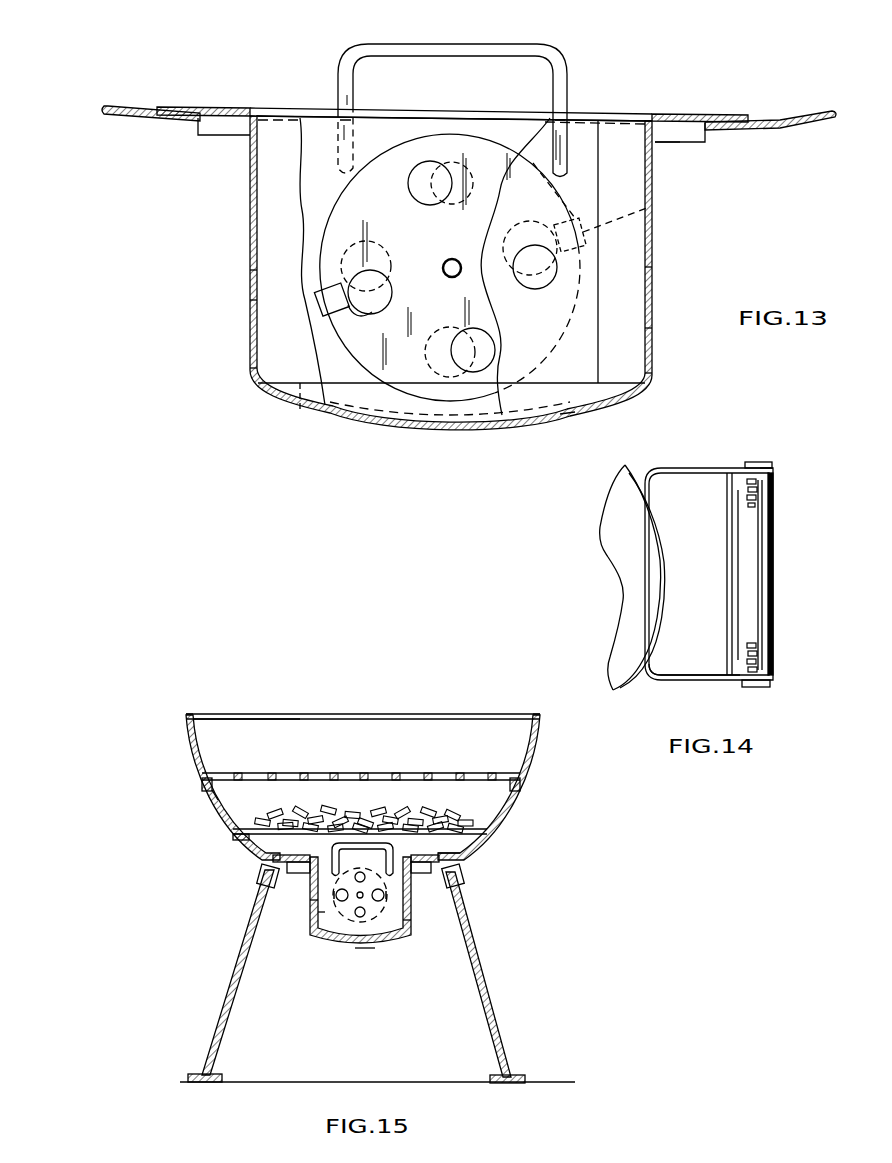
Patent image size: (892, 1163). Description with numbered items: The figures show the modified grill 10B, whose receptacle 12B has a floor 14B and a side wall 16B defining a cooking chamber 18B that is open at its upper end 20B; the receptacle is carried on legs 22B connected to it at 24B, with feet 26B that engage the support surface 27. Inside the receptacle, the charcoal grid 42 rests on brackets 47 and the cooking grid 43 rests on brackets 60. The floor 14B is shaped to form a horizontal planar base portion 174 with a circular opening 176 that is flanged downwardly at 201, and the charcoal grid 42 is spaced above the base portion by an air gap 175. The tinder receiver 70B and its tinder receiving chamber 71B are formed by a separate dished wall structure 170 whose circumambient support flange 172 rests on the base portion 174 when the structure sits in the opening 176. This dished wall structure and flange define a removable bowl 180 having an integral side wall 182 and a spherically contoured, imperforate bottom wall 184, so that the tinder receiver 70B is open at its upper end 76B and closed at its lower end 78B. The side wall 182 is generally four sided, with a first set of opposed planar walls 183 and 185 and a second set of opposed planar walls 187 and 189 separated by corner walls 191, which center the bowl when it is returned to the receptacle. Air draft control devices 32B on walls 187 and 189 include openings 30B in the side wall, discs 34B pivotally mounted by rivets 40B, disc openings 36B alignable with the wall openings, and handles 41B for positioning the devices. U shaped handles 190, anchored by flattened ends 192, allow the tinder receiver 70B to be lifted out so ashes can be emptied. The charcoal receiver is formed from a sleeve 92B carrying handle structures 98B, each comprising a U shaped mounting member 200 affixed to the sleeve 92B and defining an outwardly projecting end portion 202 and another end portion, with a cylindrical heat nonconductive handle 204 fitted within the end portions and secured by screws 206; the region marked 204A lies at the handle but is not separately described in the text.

In FIG. 15, the modified grill 10B is at (224, 702).
In FIG. 15, the receptacle 12B is at (182, 746).
In FIG. 13, the floor 14B is at (124, 126).
In FIG. 15, the floor 14B is at (263, 868).
In FIG. 15, the side wall 16B is at (212, 808).
In FIG. 15, the cooking chamber 18B is at (285, 742).
In FIG. 15, the upper end 20B is at (541, 714).
In FIG. 15, the legs 22B is at (488, 959).
In FIG. 15, the leg connection 24B is at (470, 878).
In FIG. 15, the feet 26B is at (524, 1073).
In FIG. 15, the support surface 27 is at (432, 1081).
In FIG. 13, the openings 30B is at (380, 277).
In FIG. 13, the air draft control devices 32B is at (358, 380).
In FIG. 15, the air draft control devices 32B is at (346, 923).
In FIG. 13, the discs 34B is at (420, 392).
In FIG. 13, the disc openings 36B is at (372, 312).
In FIG. 13, the rivets 40B is at (443, 267).
In FIG. 13, the handles 41B is at (648, 208).
In FIG. 15, the charcoal grid 42 is at (270, 843).
In FIG. 15, the cooking grid 43 is at (404, 766).
In FIG. 15, the brackets 47 is at (235, 838).
In FIG. 15, the brackets 60 is at (207, 786).
In FIG. 13, the tinder receiver 70B is at (248, 402).
In FIG. 13, the tinder receiving chamber 71B is at (636, 249).
In FIG. 13, the upper end 76B is at (645, 114).
In FIG. 13, the lower end 78B is at (650, 385).
In FIG. 14, the sleeve 92B is at (632, 468).
In FIG. 14, the handle structures 98B is at (770, 444).
In FIG. 13, the dished wall structure 170 is at (250, 243).
In FIG. 15, the dished wall structure 170 is at (325, 917).
In FIG. 13, the support flange 172 is at (208, 108).
In FIG. 15, the support flange 172 is at (433, 870).
In FIG. 13, the planar base portion 174 is at (778, 128).
In FIG. 15, the air gap 175 is at (448, 850).
In FIG. 13, the circular opening 176 is at (684, 130).
In FIG. 13, the bowl 180 is at (244, 302).
In FIG. 15, the bowl 180 is at (365, 952).
In FIG. 13, the side wall 182 is at (653, 267).
In FIG. 13, the planar wall 183 is at (250, 267).
In FIG. 15, the planar wall 183 is at (298, 900).
In FIG. 13, the bottom wall 184 is at (583, 410).
In FIG. 13, the planar wall 185 is at (652, 327).
In FIG. 15, the planar wall 185 is at (413, 921).
In FIG. 13, the planar wall 187 is at (373, 397).
In FIG. 13, the planar wall 189 is at (531, 405).
In FIG. 15, the planar wall 189 is at (325, 912).
In FIG. 13, the handles 190 is at (553, 56).
In FIG. 15, the handles 190 is at (348, 838).
In FIG. 13, the corner walls 191 is at (270, 194).
In FIG. 13, the handle ends 192 is at (345, 150).
In FIG. 14, the U shaped mounting member 200 is at (700, 468).
In FIG. 13, the downward flange 201 is at (710, 136).
In FIG. 14, the end portion 202 is at (727, 468).
In FIG. 14, the handle 204 is at (712, 680).
In FIG. 14, the end wall 204A is at (762, 574).
In FIG. 14, the screws 206 is at (772, 464).